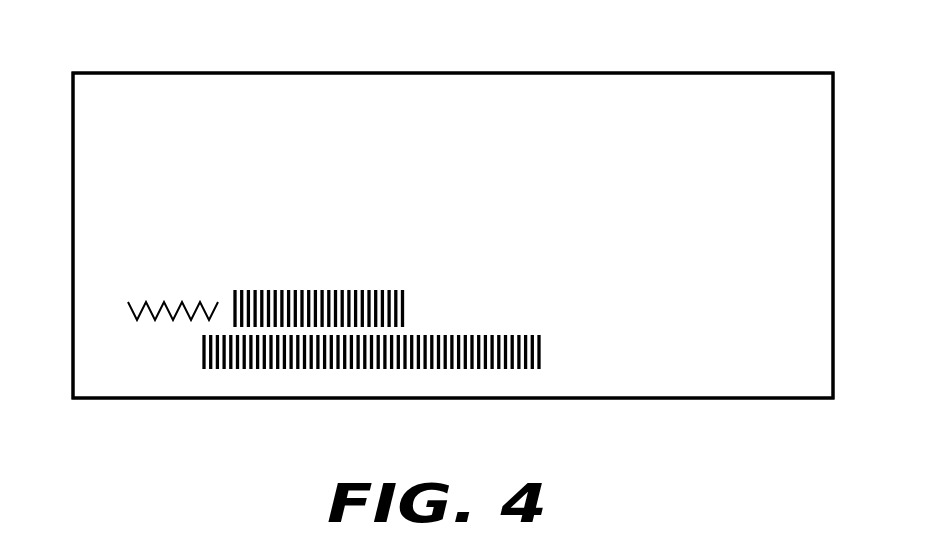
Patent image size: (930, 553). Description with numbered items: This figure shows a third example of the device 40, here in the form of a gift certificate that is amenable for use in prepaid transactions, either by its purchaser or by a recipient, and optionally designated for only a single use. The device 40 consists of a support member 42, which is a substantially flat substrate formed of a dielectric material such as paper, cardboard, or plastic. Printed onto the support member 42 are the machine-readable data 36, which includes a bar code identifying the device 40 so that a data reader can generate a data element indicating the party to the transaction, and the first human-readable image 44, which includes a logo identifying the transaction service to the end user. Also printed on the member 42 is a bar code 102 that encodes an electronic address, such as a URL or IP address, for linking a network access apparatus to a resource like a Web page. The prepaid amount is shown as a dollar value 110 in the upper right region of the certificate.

The device 40 is at (311, 471).
The support member 42 is at (70, 93).
The denomination value indicia 110 is at (773, 100).
The bar code 102 is at (237, 285).
The machine-readable data 36 is at (548, 348).
The first human-readable image 44 is at (798, 353).